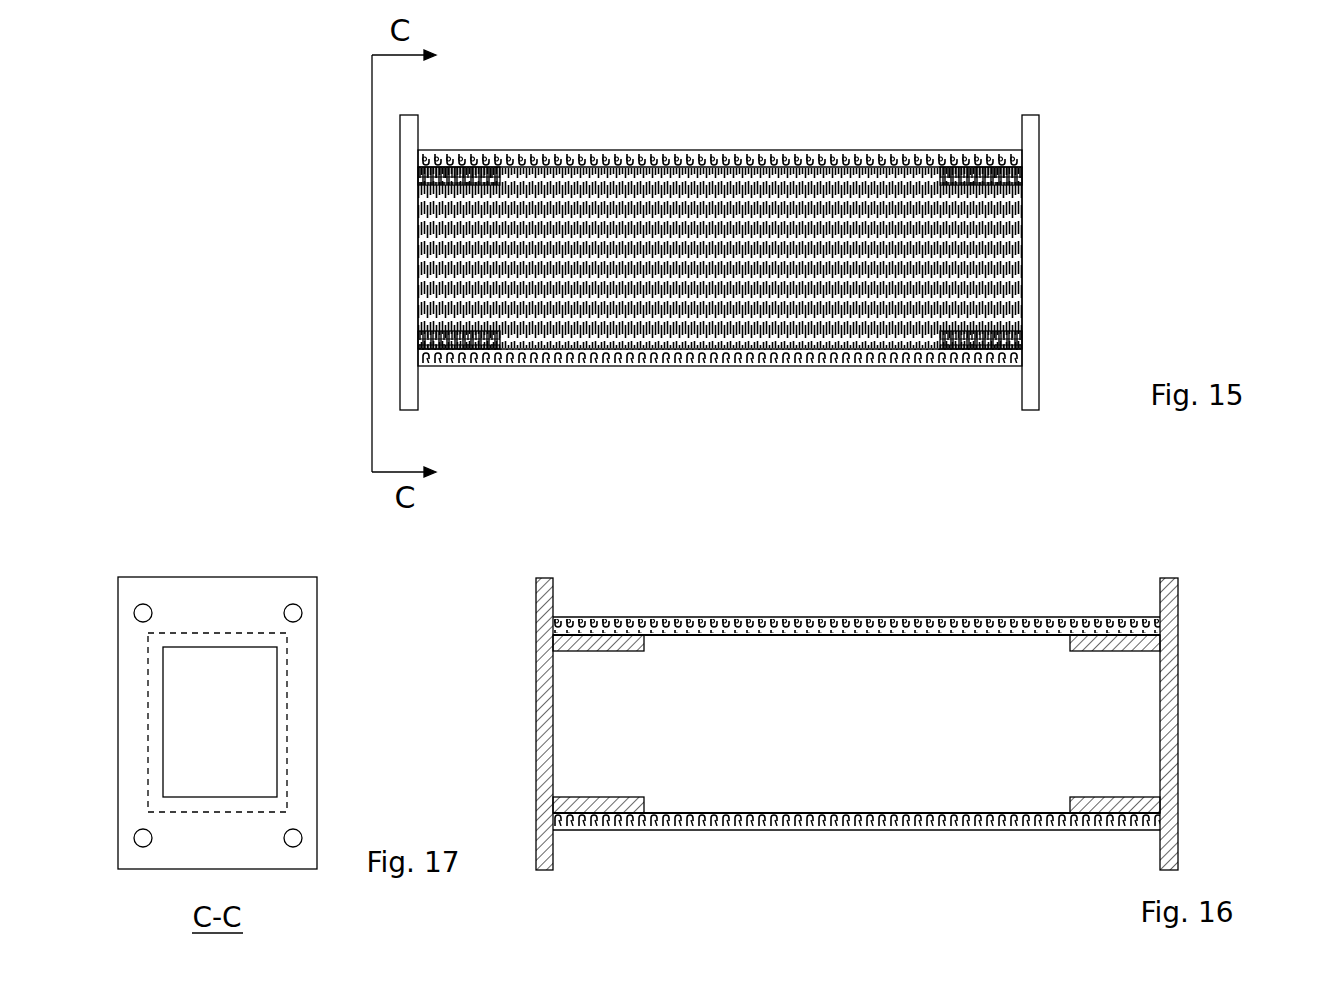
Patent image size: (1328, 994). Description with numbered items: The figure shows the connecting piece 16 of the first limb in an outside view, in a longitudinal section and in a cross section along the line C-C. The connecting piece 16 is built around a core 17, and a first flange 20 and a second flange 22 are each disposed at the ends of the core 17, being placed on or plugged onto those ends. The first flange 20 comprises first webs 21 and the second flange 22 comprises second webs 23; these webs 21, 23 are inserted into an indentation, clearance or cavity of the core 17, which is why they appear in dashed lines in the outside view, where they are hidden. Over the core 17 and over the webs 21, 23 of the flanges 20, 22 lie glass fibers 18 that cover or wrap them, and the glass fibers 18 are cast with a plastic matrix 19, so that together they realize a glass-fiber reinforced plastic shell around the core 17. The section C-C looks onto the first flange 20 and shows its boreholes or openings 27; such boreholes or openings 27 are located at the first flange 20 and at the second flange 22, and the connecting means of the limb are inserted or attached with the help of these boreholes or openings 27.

In FIG. 15, the connecting piece 16 is at (1080, 205).
In FIG. 16, the connecting piece 16 is at (776, 592).
In FIG. 17, the connecting piece 16 is at (172, 521).
In FIG. 16, the core 17 is at (1145, 742).
In FIG. 17, the core 17 is at (247, 713).
In FIG. 16, the glass fibers 18 is at (942, 618).
In FIG. 16, the plastic matrix 19 is at (1003, 618).
In FIG. 15, the first flange 20 is at (410, 362).
In FIG. 16, the first flange 20 is at (536, 618).
In FIG. 17, the first flange 20 is at (242, 603).
In FIG. 16, the first webs 21 is at (595, 628).
In FIG. 15, the second flange 22 is at (1030, 355).
In FIG. 16, the second flange 22 is at (1178, 612).
In FIG. 16, the second webs 23 is at (1106, 618).
In FIG. 17, the boreholes or openings 27 is at (140, 606).